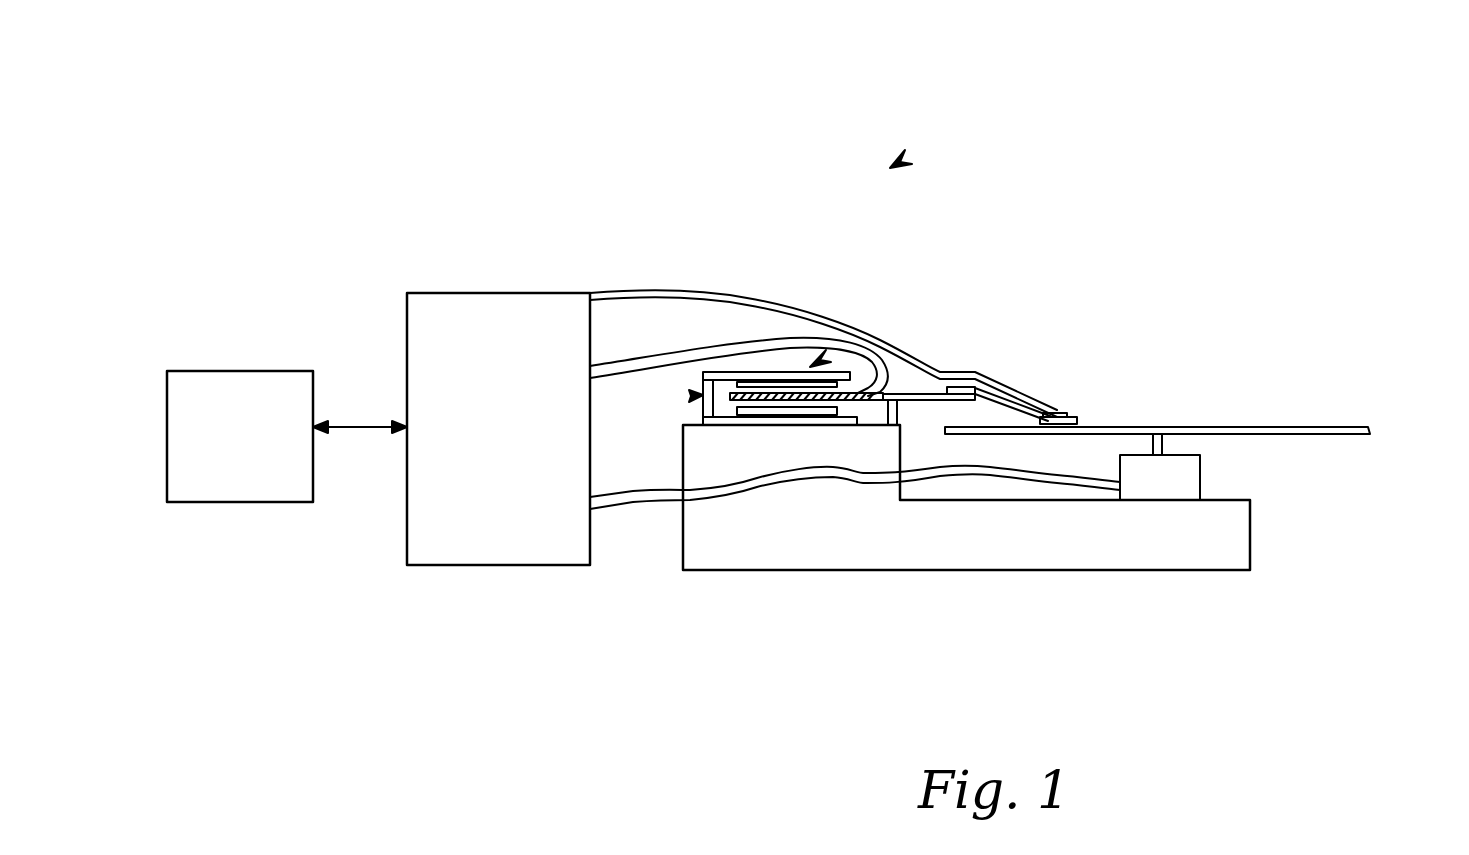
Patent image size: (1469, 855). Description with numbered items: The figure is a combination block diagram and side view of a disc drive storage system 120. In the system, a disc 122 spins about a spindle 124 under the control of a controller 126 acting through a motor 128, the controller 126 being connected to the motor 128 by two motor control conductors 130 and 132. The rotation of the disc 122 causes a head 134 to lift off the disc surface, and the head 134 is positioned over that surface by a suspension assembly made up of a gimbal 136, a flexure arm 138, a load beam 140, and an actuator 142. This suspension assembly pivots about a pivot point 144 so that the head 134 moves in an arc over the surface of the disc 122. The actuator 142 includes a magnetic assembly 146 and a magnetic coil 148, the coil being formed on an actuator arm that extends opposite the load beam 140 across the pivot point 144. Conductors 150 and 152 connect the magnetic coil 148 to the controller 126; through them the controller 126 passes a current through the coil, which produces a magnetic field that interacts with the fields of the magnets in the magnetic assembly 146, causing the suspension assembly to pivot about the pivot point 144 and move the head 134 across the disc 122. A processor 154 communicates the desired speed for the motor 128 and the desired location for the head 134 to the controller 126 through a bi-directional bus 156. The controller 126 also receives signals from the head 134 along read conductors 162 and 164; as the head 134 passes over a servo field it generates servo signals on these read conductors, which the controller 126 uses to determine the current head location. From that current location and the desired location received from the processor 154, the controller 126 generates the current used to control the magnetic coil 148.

The storage system 120 is at (902, 160).
The disc 122 is at (1358, 428).
The spindle 124 is at (1163, 442).
The controller 126 is at (490, 565).
The motor 128 is at (1200, 476).
The motor control conductor 130 is at (640, 502).
The motor control conductor 132 is at (670, 496).
The head 134 is at (1080, 420).
The gimbal 136 is at (1067, 417).
The flexure arm 138 is at (998, 387).
The load beam 140 is at (947, 363).
The actuator 142 is at (814, 362).
The pivot point 144 is at (912, 398).
The magnetic assembly 146 is at (695, 397).
The magnetic coil 148 is at (737, 397).
The conductor 150 is at (732, 307).
The conductor 152 is at (770, 306).
The processor 154 is at (312, 370).
The bi-directional bus 156 is at (363, 443).
The read conductor 162 is at (652, 293).
The read conductor 164 is at (617, 296).